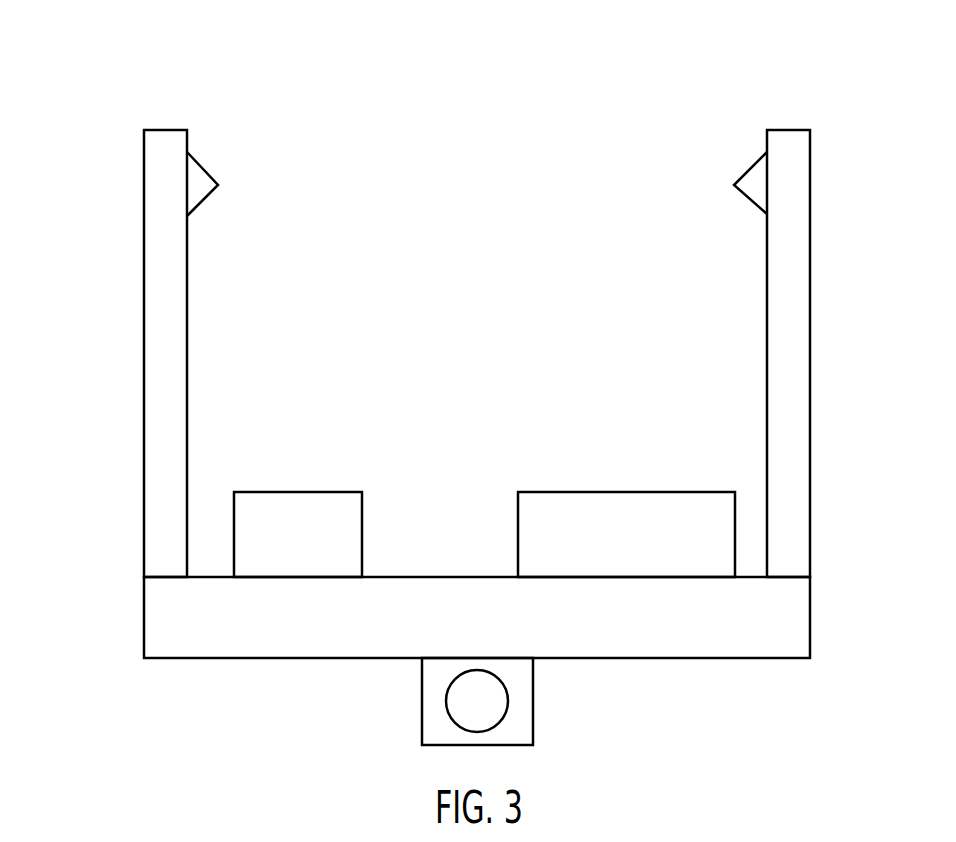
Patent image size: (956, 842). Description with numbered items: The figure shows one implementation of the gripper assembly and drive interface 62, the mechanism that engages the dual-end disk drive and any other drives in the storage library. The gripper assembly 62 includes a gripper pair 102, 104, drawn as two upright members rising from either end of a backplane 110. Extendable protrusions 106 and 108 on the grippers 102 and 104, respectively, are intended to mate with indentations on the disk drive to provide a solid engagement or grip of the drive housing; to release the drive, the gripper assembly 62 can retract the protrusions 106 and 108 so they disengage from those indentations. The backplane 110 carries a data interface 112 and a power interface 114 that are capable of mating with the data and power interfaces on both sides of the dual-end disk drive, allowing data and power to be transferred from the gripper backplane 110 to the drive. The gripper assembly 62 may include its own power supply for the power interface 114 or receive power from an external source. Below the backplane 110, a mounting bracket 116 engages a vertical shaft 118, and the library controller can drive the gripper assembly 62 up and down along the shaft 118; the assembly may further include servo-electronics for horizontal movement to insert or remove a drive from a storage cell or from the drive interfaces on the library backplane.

The gripper assembly and drive interface 62 is at (226, 58).
The gripper 102 is at (123, 353).
The gripper 104 is at (746, 353).
The extendable protrusion 106 is at (237, 181).
The extendable protrusion 108 is at (718, 180).
The backplane 110 is at (436, 617).
The data interface 112 is at (626, 490).
The power interface 114 is at (298, 492).
The mounting bracket 116 is at (436, 701).
The vertical shaft 118 is at (528, 703).